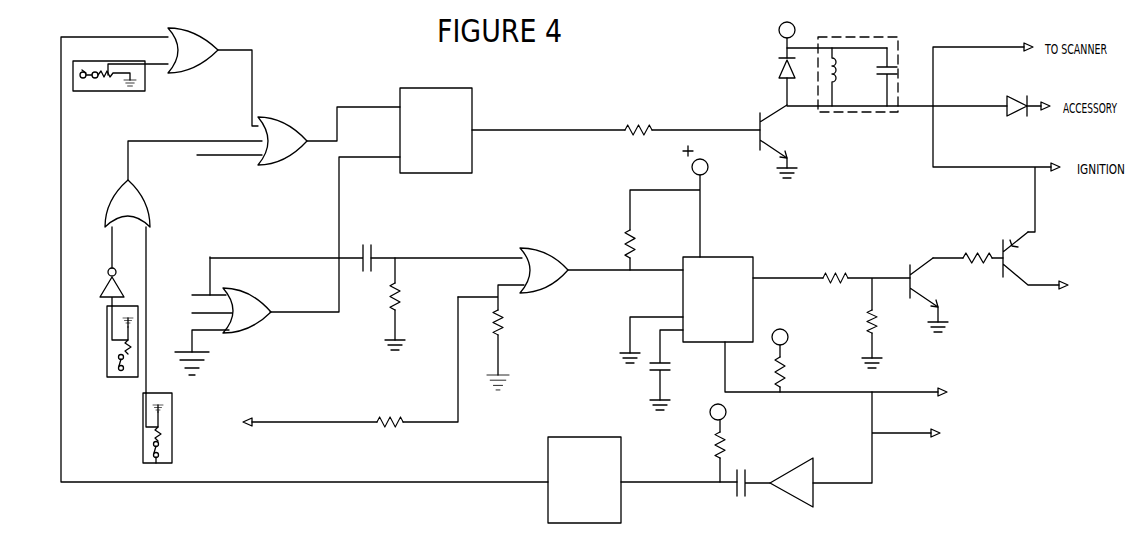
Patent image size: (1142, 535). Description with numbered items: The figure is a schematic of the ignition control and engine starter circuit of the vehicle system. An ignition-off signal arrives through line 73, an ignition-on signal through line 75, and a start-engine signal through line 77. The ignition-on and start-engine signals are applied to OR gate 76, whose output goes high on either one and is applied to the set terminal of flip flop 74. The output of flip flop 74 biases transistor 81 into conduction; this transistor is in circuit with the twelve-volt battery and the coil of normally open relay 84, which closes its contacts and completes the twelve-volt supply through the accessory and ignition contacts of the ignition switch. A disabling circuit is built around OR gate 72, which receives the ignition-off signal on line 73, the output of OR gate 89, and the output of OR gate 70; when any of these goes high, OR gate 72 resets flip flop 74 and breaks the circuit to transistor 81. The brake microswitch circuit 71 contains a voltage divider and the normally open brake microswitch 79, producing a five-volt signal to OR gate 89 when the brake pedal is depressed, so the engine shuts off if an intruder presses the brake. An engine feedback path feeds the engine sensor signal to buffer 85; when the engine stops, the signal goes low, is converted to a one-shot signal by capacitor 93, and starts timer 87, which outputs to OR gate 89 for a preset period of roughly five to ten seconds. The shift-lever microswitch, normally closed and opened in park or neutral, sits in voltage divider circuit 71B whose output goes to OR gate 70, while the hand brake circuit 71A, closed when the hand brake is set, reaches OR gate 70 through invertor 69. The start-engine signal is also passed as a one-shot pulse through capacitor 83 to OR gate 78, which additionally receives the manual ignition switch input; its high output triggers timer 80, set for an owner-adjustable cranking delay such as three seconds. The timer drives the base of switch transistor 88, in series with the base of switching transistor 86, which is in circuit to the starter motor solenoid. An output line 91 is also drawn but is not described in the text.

The invertor 69 is at (115, 288).
The OR gate 70 is at (140, 195).
The brake microswitch circuit 71 is at (108, 82).
The hand brake circuit 71A is at (130, 372).
The voltage divider circuit 71B is at (168, 430).
The OR gate 72 is at (285, 146).
The line 73 is at (203, 155).
The flip flop 74 is at (453, 112).
The line 75 is at (195, 313).
The OR gate 76 is at (248, 298).
The line 77 is at (195, 295).
The OR gate 78 is at (547, 252).
The brake microswitch 79 is at (86, 85).
The timer 80 is at (735, 267).
The transistor 81 is at (760, 108).
The capacitor 83 is at (378, 249).
The normally open relay 84 is at (860, 93).
The buffer 85 is at (797, 485).
The switching transistor 86 is at (998, 247).
The timer 87 is at (593, 470).
The switch transistor 88 is at (927, 285).
The OR gate 89 is at (183, 50).
The output line 91 is at (262, 420).
The capacitor 93 is at (742, 470).